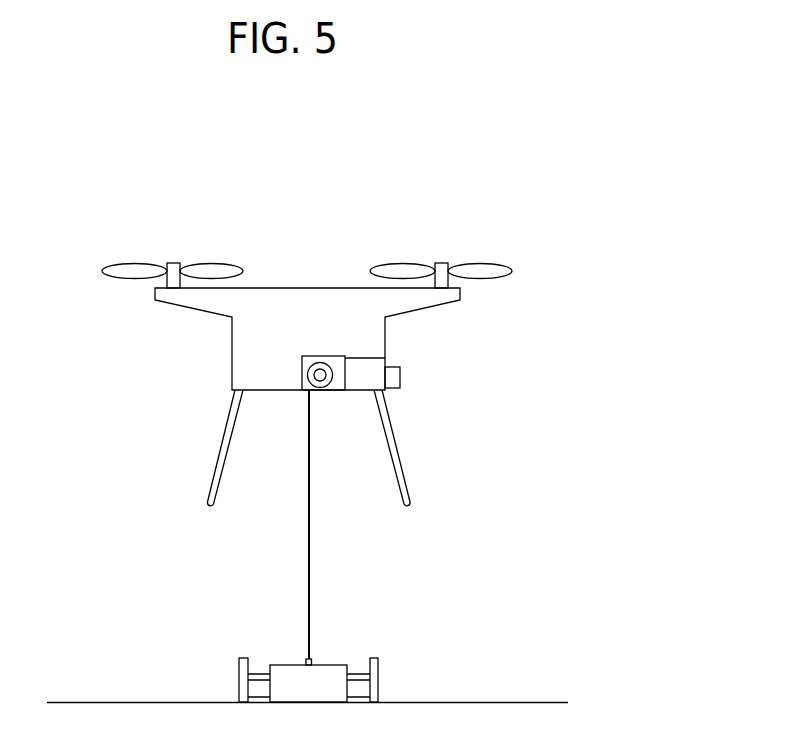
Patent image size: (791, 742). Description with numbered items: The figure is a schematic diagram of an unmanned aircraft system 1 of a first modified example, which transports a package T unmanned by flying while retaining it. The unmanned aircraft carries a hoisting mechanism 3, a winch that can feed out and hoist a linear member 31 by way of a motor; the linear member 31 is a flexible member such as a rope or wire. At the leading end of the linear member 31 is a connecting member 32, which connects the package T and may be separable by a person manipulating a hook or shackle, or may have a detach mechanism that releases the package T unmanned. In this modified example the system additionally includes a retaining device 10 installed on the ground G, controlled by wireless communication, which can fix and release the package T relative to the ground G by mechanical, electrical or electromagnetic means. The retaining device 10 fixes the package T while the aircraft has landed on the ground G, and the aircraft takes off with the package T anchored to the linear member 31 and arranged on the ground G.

The unmanned aircraft system 1 is at (396, 207).
The hoisting mechanism 3 is at (347, 357).
The linear member 31 is at (311, 532).
The connecting member 32 is at (312, 661).
The retaining device 10 is at (378, 667).
The package T is at (282, 665).
The ground G is at (540, 702).